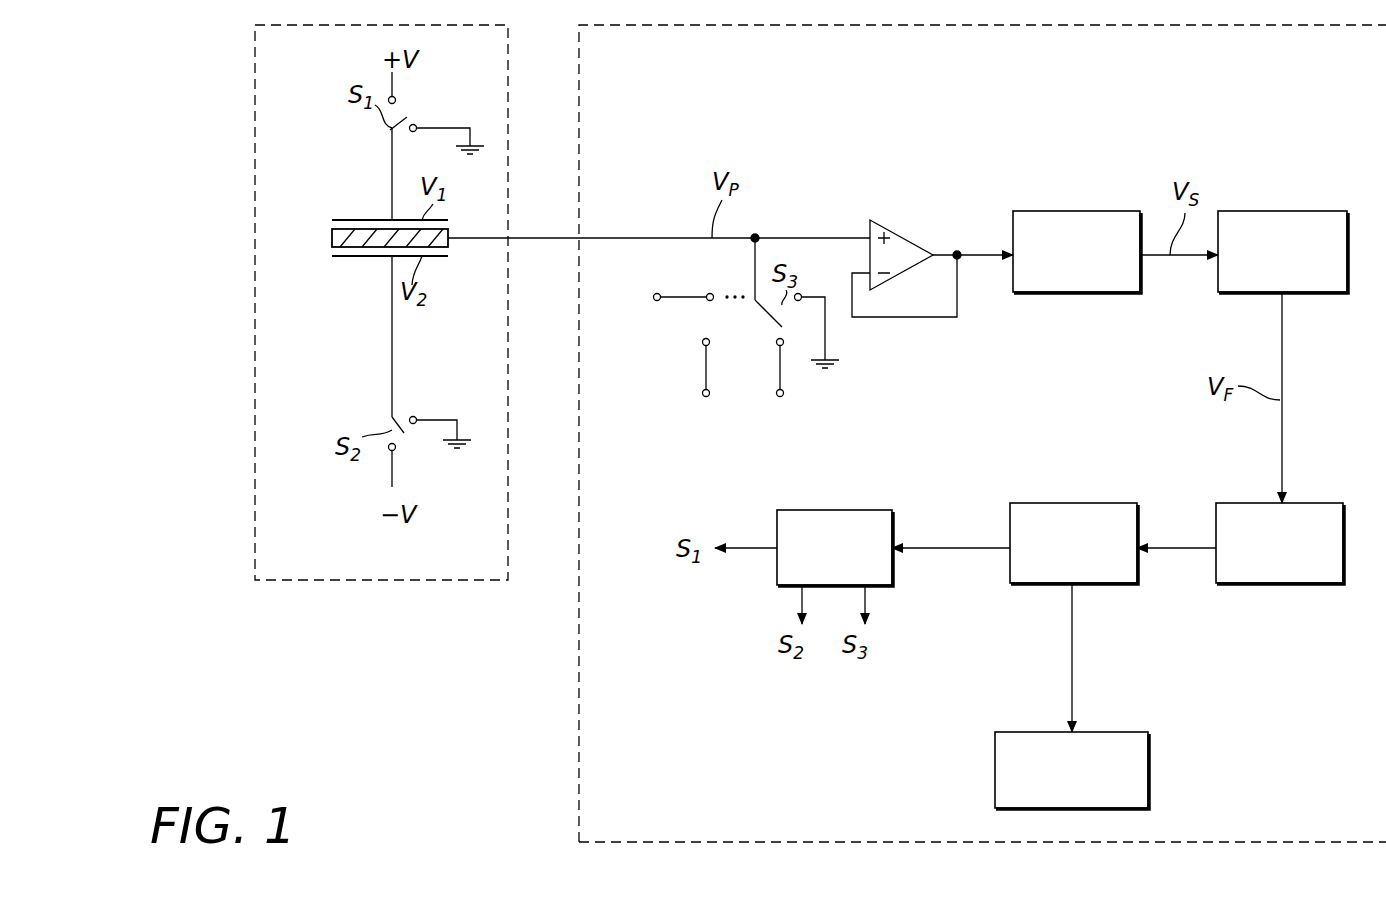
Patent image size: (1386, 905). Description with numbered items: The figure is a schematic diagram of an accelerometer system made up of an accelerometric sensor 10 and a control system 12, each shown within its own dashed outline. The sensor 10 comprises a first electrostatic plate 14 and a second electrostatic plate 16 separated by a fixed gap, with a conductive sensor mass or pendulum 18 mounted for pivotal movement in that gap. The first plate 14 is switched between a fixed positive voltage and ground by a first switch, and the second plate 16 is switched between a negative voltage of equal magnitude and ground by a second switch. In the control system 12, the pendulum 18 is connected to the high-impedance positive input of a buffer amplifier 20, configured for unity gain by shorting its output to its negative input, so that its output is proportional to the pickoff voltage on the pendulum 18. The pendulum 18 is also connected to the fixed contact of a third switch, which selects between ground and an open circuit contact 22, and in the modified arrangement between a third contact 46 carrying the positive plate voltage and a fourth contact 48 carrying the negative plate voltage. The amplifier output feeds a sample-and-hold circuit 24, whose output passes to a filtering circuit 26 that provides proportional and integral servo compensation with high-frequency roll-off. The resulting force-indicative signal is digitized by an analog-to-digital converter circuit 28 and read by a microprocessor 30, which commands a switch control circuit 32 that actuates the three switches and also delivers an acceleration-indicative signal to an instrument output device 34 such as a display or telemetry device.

The accelerometric sensor 10 is at (255, 540).
The control system 12 is at (579, 793).
The first electrostatic plate 14 is at (352, 220).
The second electrostatic plate 16 is at (362, 256).
The pendulum 18 is at (332, 238).
The buffer amplifier 20 is at (893, 222).
The open circuit contact 22 is at (778, 347).
The sample-and-hold circuit 24 is at (1075, 211).
The filtering circuit 26 is at (1284, 211).
The analog-to-digital converter circuit 28 is at (1277, 583).
The microprocessor 30 is at (1072, 503).
The switch control circuit 32 is at (838, 510).
The instrument output device 34 is at (995, 770).
The third contact 46 is at (710, 290).
The fourth contact 48 is at (702, 347).